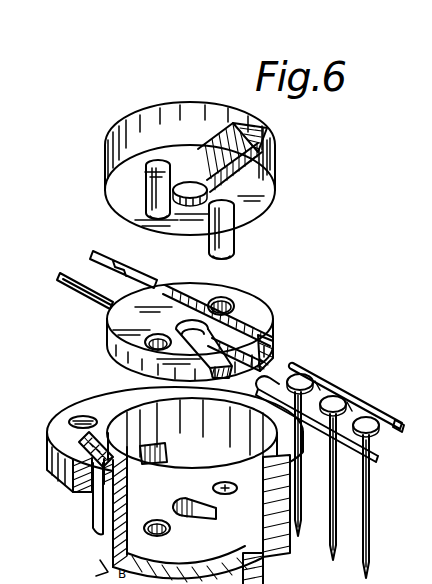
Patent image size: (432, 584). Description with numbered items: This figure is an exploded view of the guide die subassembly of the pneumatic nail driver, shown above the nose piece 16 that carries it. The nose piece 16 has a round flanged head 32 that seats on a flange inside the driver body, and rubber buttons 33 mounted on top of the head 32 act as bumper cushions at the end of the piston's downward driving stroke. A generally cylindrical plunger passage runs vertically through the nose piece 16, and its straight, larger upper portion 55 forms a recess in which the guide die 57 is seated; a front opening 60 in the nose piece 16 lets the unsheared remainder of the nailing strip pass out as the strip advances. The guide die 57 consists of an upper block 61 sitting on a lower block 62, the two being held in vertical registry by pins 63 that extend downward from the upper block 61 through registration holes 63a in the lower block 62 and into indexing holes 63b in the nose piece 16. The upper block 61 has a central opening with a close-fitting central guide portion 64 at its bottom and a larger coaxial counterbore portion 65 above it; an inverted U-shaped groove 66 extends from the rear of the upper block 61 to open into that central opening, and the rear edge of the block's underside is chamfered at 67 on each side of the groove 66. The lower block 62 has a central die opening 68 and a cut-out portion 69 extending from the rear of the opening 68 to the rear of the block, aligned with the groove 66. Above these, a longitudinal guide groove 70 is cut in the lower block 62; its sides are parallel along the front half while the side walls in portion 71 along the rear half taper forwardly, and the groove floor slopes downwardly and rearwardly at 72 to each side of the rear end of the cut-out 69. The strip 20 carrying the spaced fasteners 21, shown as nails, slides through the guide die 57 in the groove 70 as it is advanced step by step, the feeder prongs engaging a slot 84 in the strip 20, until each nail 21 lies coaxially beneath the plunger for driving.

The nose piece 16 is at (103, 531).
The strip 20 is at (80, 288).
The fasteners 21 is at (294, 501).
The flanged head 32 is at (65, 479).
The rubber buttons 33 is at (95, 457).
The upper portion of plunger passage 55 is at (210, 440).
The guide die 57 is at (163, 268).
The front opening 60 is at (130, 464).
The upper block 61 is at (125, 100).
The lower block 62 is at (153, 368).
The pins 63 is at (146, 195).
The registration holes 63a is at (222, 324).
The indexing holes 63b is at (153, 523).
The central guide portion 64 is at (188, 184).
The counterbore portion 65 is at (200, 188).
The inverted U-shaped groove 66 is at (249, 154).
The chamfer 67 is at (246, 166).
The central die opening 68 is at (183, 337).
The cut-out portion 69 is at (217, 347).
The guide groove 70 is at (158, 318).
The tapered portion 71 is at (276, 324).
The sloped floor 72 is at (280, 348).
The slot 84 is at (374, 403).